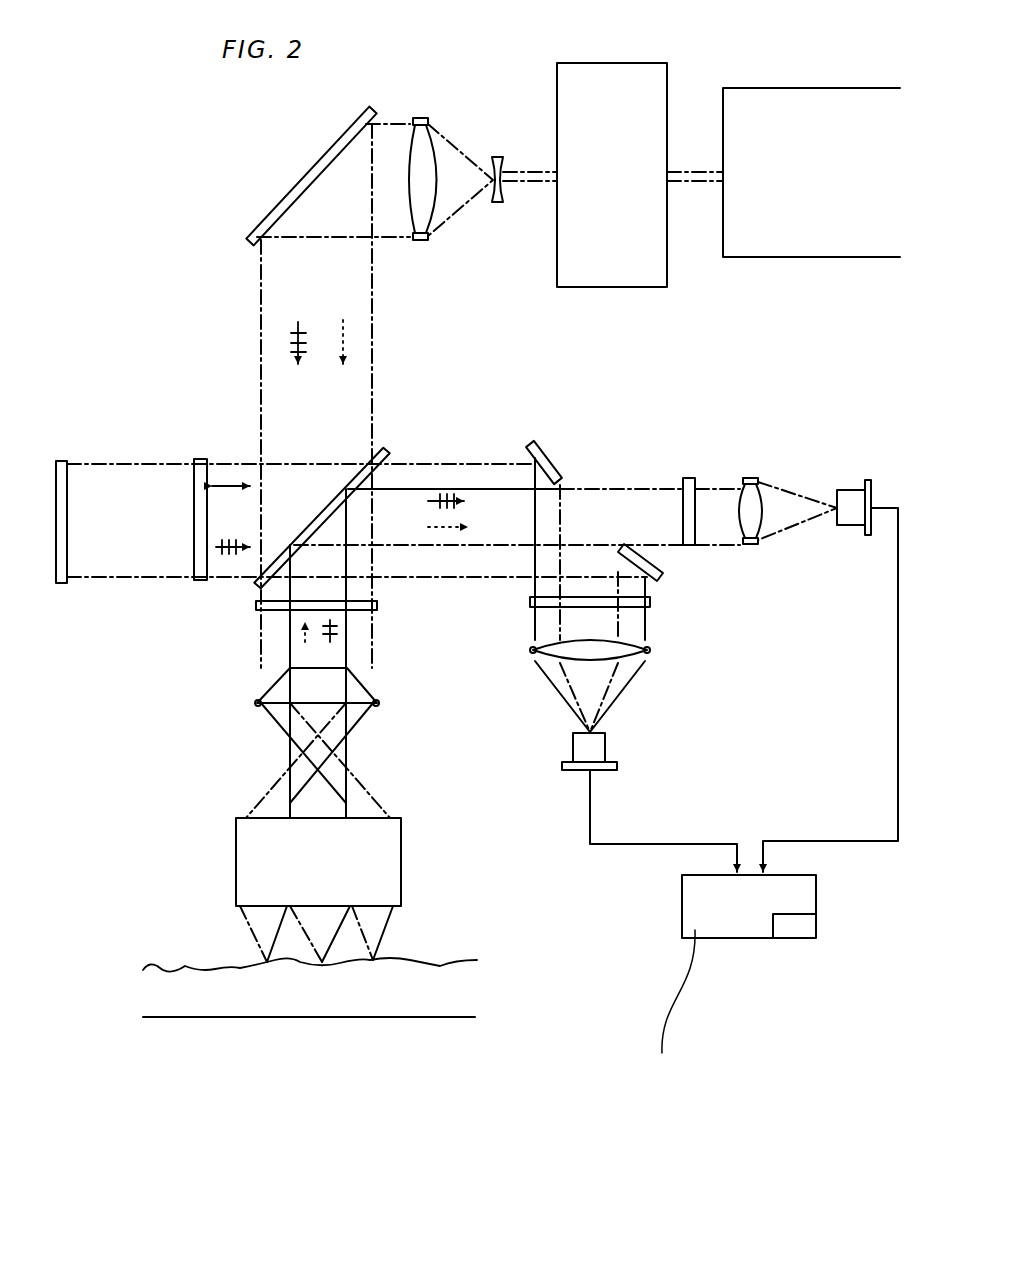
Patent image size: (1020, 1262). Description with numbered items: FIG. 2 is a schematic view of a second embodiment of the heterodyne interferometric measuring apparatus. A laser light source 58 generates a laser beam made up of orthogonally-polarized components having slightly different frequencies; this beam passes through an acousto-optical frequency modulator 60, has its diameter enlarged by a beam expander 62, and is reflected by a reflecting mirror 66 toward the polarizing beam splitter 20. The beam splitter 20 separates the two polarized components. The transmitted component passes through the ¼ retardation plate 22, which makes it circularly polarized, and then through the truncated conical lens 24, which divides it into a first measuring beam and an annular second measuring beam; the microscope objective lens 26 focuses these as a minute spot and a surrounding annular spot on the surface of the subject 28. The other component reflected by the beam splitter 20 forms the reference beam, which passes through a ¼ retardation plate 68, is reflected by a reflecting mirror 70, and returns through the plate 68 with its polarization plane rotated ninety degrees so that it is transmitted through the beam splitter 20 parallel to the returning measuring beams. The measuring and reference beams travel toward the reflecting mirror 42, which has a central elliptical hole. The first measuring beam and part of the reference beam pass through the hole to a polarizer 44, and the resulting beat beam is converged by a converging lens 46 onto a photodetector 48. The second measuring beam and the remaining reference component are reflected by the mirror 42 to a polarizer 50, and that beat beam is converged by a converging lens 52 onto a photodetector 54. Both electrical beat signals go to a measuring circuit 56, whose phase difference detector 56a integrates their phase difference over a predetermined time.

The polarizing beam splitter 20 is at (386, 451).
The ¼ retardation plate 22 is at (378, 605).
The truncated conical lens 24 is at (380, 703).
The microscope objective lens 26 is at (401, 860).
The subject 28 is at (327, 1007).
The reflecting mirror 42 is at (664, 576).
The polarizer 44 is at (690, 478).
The converging lens 46 is at (749, 478).
The photodetector 48 is at (868, 480).
The polarizer 50 is at (651, 602).
The converging lens 52 is at (651, 650).
The photodetector 54 is at (607, 748).
The measuring circuit 56 is at (750, 941).
The phase difference detector 56a is at (800, 940).
The laser light source 58 is at (814, 95).
The acousto-optical frequency modulator 60 is at (613, 63).
The beam expander 62 is at (513, 252).
The reflecting mirror 66 is at (307, 177).
The ¼ retardation plate 68 is at (200, 458).
The reflecting mirror 70 is at (62, 584).